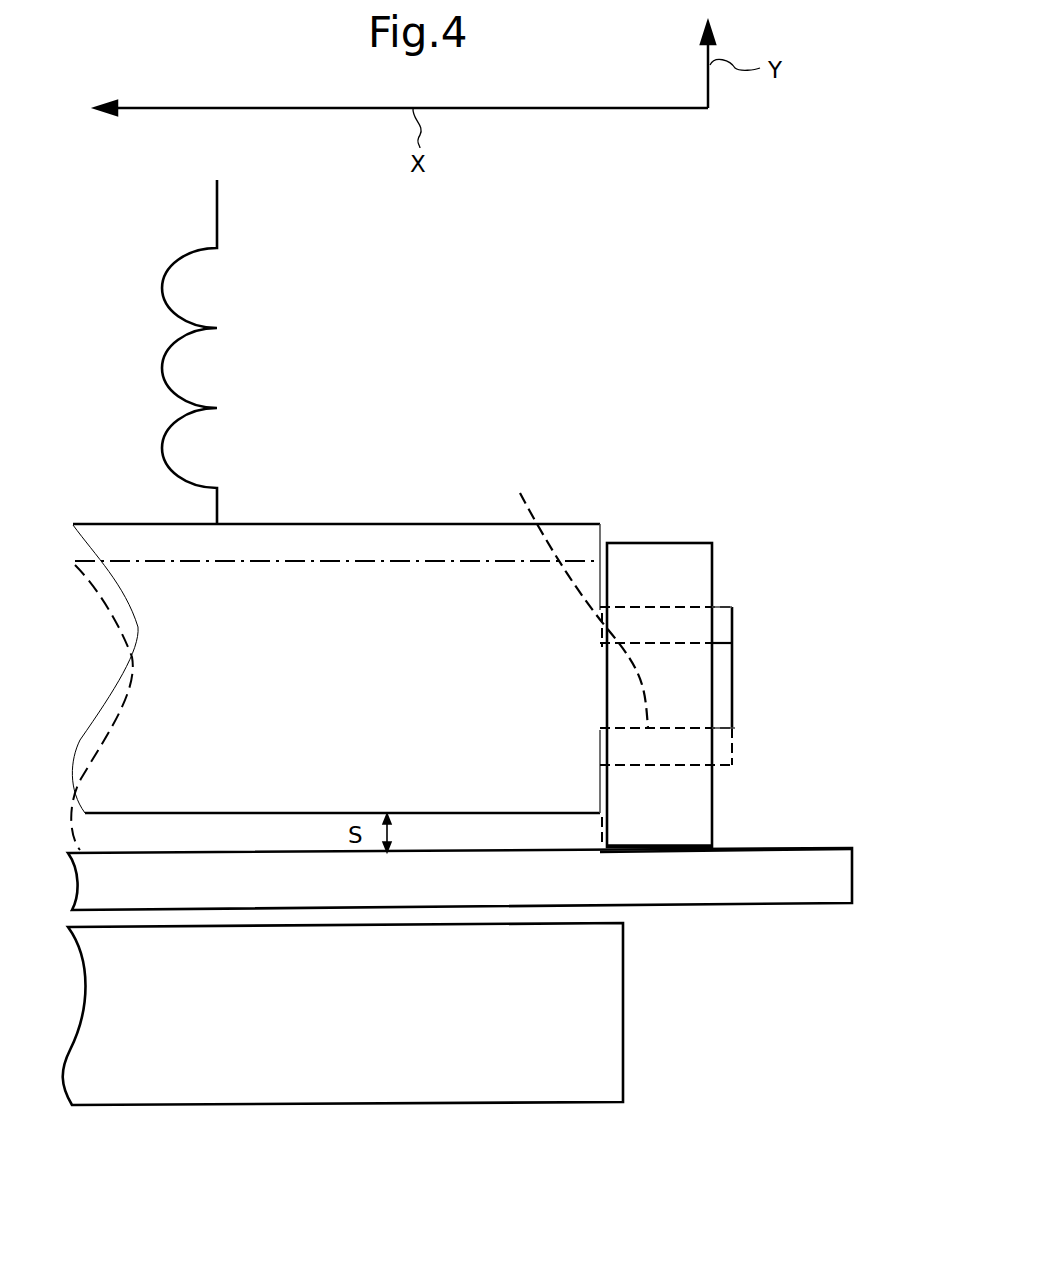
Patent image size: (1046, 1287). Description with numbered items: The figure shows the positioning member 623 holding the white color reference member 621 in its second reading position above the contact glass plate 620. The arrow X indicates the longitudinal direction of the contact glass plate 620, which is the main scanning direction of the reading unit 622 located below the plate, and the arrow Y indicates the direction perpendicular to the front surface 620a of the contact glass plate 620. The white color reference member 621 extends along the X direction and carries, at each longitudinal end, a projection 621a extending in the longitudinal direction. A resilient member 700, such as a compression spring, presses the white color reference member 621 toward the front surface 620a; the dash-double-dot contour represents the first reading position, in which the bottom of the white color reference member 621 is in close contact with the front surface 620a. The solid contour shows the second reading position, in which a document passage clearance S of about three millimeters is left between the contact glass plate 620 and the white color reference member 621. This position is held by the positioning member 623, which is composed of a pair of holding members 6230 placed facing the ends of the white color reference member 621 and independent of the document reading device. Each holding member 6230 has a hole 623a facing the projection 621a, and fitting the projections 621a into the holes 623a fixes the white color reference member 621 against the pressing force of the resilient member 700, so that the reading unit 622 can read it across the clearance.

The resilient member 700 is at (217, 193).
The white color reference member 621 is at (297, 537).
The positioning member 623 is at (620, 597).
The holding member 6230 is at (668, 565).
The hole 623a is at (569, 597).
The projection 621a is at (725, 607).
The contact glass plate 620 is at (760, 870).
The front surface 620a is at (795, 848).
The reading unit 622 is at (368, 1087).